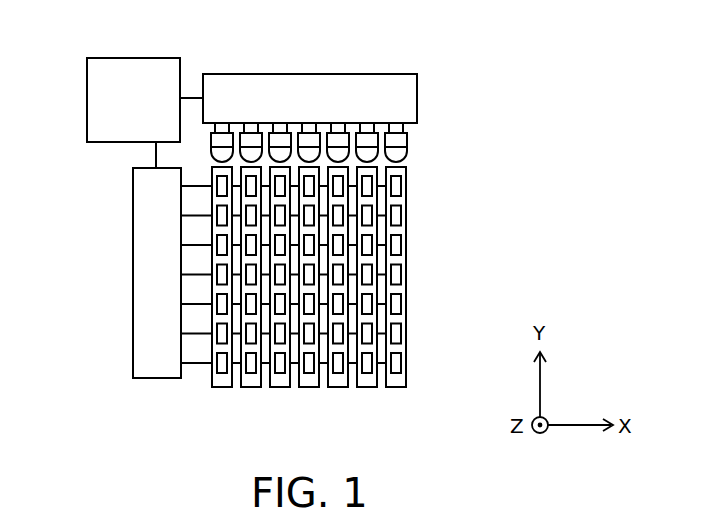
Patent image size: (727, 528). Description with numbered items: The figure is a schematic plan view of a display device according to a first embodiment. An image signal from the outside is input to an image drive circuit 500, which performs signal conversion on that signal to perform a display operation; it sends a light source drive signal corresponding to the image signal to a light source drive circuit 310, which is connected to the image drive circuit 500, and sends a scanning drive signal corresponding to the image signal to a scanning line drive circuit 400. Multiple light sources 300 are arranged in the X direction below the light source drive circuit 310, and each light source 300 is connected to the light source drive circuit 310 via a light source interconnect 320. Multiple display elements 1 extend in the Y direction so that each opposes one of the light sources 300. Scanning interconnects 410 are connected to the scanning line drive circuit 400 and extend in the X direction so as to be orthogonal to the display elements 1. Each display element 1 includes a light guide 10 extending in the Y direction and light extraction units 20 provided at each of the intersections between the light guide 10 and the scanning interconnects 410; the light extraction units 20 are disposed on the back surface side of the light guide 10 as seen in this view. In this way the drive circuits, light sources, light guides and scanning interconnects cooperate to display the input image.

The display element 1 is at (482, 212).
The light guide 10 is at (398, 227).
The light extraction unit 20 is at (395, 273).
The light source 300 is at (393, 152).
The light source drive circuit 310 is at (386, 100).
The light source interconnect 320 is at (405, 127).
The scanning line drive circuit 400 is at (155, 344).
The scanning interconnect 410 is at (197, 365).
The image drive circuit 500 is at (133, 87).